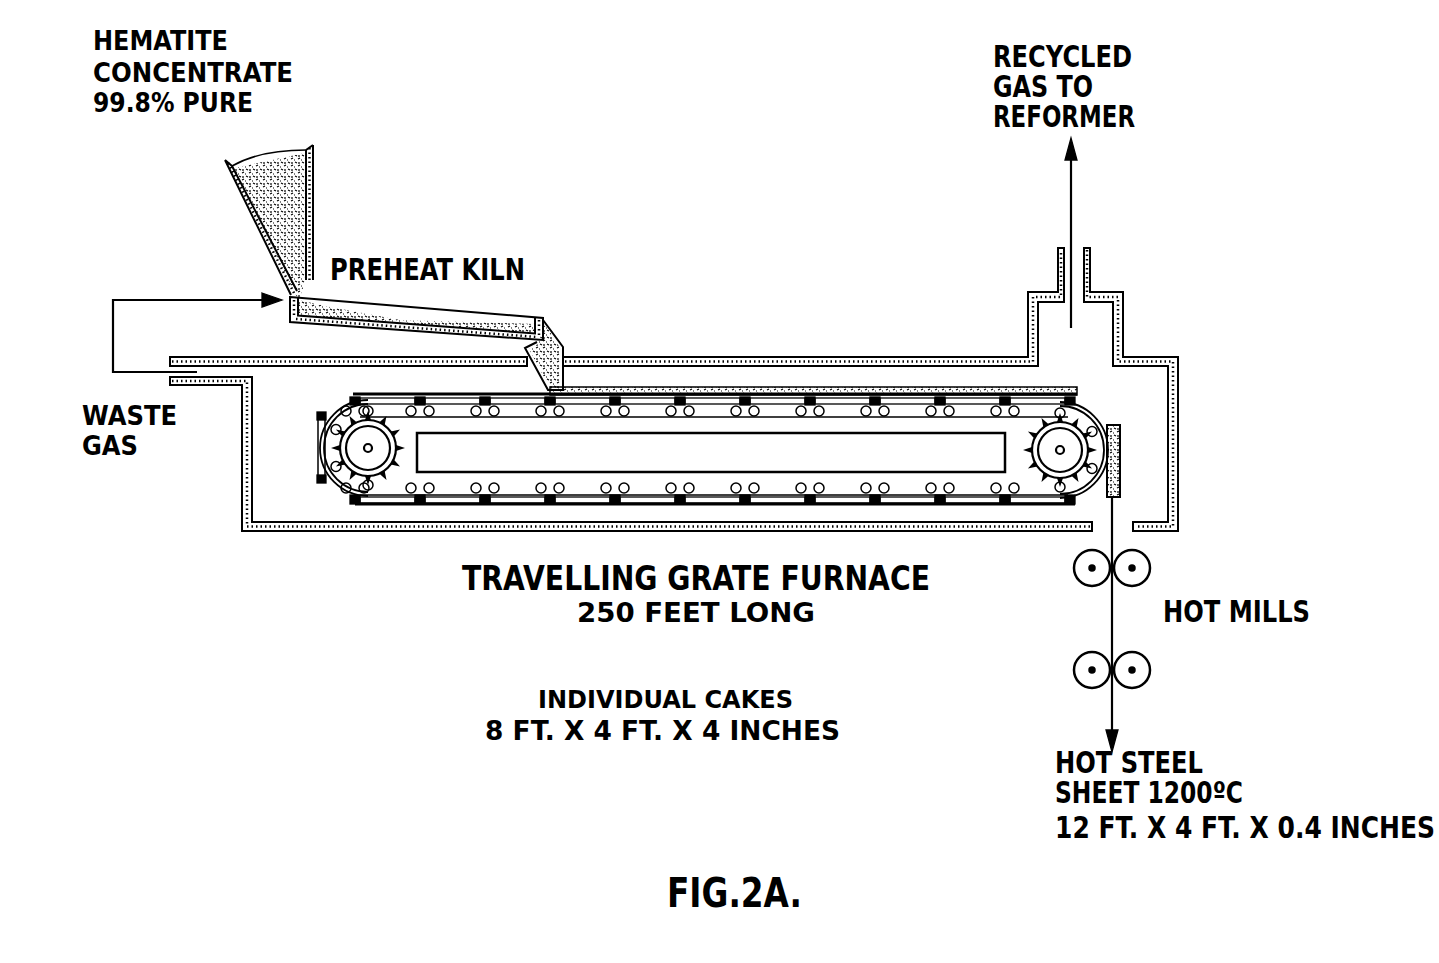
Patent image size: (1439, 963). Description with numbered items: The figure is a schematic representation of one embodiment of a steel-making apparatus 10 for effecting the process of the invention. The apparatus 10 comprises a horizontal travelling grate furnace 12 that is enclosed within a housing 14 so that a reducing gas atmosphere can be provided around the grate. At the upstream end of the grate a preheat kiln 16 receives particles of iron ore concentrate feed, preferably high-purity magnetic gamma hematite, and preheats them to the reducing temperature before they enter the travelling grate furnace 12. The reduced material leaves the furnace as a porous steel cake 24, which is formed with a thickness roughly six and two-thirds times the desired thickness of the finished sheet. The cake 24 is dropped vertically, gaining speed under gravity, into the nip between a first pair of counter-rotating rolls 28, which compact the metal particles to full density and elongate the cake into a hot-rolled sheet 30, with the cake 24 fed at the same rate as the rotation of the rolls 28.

The apparatus 10 is at (709, 320).
The horizontal travelling grate furnace 12 is at (885, 460).
The housing 14 is at (665, 358).
The preheat kiln 16 is at (515, 312).
The porous steel cake 24 is at (1113, 513).
The first pair of counter-rotating rolls 28 is at (1073, 578).
The hot-rolled sheet 30 is at (1108, 610).